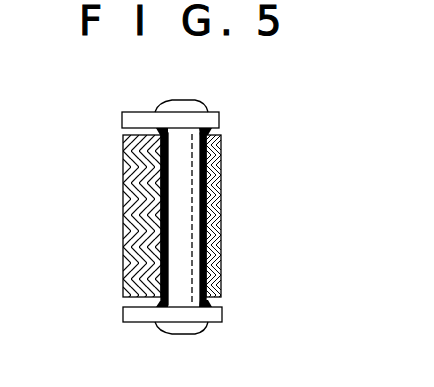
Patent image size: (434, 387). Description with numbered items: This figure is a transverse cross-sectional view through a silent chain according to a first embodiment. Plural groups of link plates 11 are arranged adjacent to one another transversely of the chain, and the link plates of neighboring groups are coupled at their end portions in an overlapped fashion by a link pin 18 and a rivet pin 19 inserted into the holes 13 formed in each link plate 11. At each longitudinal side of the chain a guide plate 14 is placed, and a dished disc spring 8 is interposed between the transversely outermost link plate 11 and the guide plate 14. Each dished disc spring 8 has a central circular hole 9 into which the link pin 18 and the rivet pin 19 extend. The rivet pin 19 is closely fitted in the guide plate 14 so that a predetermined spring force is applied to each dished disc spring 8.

The dished disc spring 8 is at (152, 134).
The central circular hole 9 is at (176, 130).
The link plate 11 is at (224, 248).
The hole 13 is at (213, 146).
The guide plate 14 is at (134, 119).
The link pin 18 is at (194, 200).
The rivet pin 19 is at (172, 327).